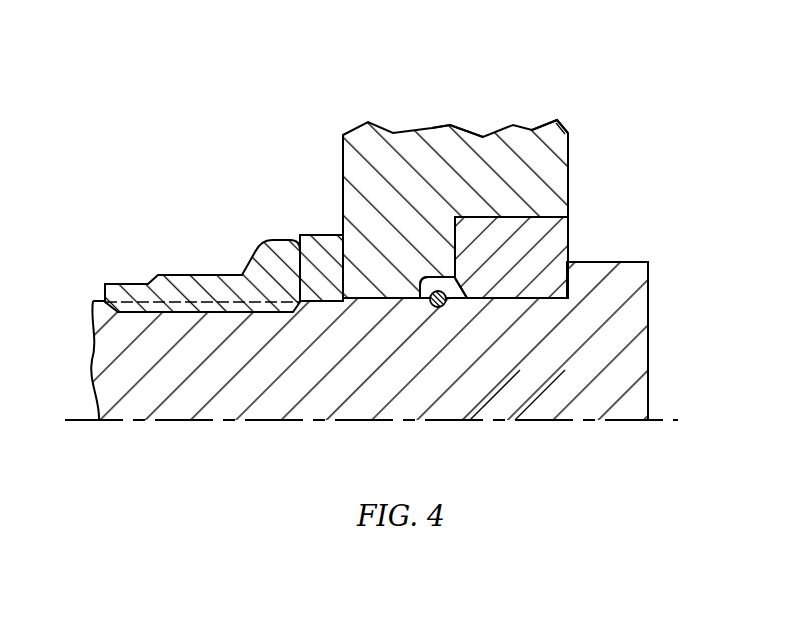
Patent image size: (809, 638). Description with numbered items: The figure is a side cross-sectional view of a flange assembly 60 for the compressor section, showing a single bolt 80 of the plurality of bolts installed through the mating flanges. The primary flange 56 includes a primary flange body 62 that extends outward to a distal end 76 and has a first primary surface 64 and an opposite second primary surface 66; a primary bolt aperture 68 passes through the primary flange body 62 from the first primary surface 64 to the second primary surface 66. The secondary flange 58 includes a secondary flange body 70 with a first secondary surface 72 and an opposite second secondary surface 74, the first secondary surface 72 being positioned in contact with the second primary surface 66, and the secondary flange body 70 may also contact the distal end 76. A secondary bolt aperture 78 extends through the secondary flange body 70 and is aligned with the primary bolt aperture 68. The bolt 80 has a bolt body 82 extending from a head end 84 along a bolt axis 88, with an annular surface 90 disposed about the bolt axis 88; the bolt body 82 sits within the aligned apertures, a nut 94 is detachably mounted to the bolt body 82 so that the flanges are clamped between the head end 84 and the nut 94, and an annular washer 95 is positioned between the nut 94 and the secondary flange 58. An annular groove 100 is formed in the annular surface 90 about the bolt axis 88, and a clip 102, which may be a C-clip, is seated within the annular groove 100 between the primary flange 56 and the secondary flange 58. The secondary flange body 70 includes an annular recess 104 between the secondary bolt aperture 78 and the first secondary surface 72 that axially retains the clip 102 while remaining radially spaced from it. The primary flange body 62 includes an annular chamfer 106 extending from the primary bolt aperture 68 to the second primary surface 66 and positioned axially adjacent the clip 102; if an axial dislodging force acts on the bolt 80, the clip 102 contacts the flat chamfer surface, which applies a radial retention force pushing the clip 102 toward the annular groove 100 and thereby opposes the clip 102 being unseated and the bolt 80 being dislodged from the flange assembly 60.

The primary flange 56 is at (577, 232).
The secondary flange 58 is at (312, 128).
The flange assembly 60 is at (592, 122).
The primary flange body 62 is at (567, 260).
The first primary surface 64 is at (569, 287).
The second primary surface 66 is at (455, 245).
The primary bolt aperture 68 is at (533, 373).
The secondary flange body 70 is at (455, 140).
The first secondary surface 72 is at (458, 258).
The second secondary surface 74 is at (343, 173).
The distal end 76 is at (518, 217).
The secondary bolt aperture 78 is at (378, 355).
The bolt 80 is at (663, 378).
The bolt body 82 is at (500, 393).
The head end 84 is at (648, 288).
The bolt axis 88 is at (80, 422).
The annular surface 90 is at (392, 297).
The nut 94 is at (187, 276).
The annular washer 95 is at (320, 236).
The annular groove 100 is at (448, 310).
The clip 102 is at (433, 312).
The annular recess 104 is at (432, 277).
The annular chamfer 106 is at (470, 282).